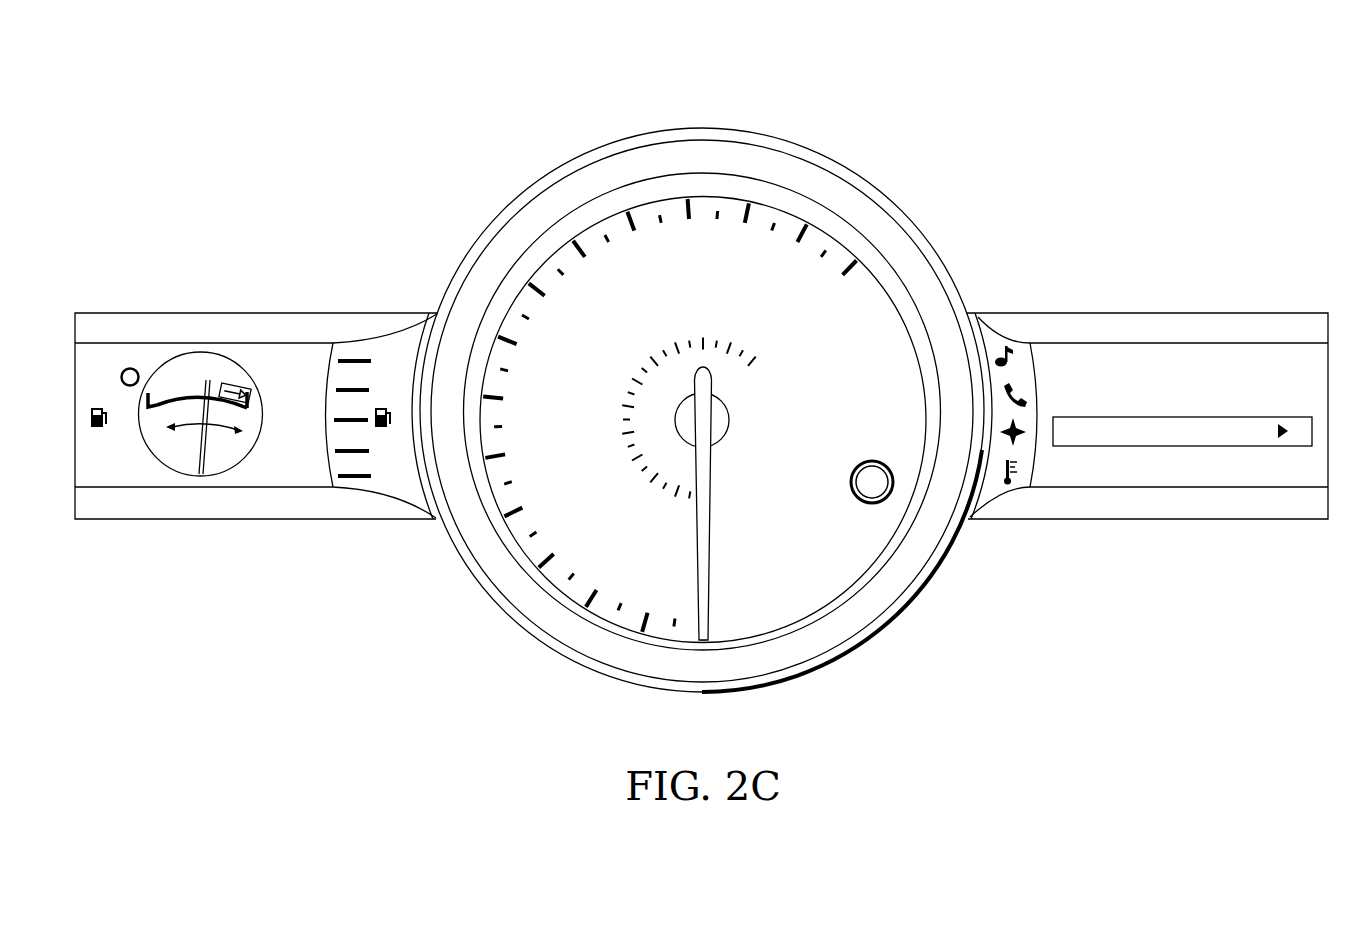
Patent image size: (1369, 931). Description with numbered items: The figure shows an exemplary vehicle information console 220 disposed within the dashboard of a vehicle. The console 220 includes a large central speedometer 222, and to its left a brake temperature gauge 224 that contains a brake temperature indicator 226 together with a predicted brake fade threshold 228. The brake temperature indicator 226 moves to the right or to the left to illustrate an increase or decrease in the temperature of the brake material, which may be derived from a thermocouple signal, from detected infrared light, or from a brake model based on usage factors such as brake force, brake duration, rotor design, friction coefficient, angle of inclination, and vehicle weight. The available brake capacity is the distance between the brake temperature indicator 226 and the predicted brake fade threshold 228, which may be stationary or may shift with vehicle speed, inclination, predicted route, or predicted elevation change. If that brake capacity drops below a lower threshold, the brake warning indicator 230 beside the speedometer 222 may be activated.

The vehicle information console 220 is at (701, 387).
The speedometer 222 is at (718, 392).
The brake temperature gauge 224 is at (212, 418).
The brake temperature indicator 226 is at (226, 436).
The predicted brake fade threshold 228 is at (238, 386).
The brake warning indicator 230 is at (894, 482).